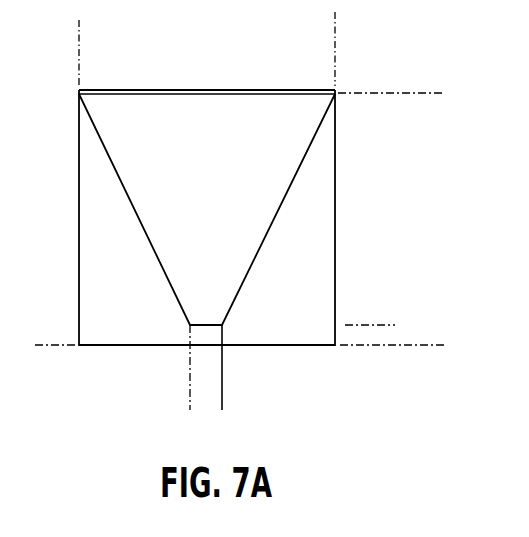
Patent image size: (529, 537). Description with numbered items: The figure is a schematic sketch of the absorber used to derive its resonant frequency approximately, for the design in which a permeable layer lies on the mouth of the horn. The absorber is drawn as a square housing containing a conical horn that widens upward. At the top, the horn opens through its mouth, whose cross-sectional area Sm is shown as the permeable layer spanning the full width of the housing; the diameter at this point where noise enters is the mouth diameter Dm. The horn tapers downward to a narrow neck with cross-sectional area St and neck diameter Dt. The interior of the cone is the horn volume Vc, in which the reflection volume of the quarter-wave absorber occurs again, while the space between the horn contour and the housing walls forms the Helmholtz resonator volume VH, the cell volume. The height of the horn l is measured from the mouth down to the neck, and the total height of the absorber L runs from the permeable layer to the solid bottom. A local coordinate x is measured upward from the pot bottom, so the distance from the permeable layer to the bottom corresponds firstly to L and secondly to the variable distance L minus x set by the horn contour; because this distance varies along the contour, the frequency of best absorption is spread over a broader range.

The diameter at horn mouth Dm is at (335, 40).
The cross-sectional area of horn mouth Sm is at (300, 92).
The horn volume Vc is at (268, 167).
The Helmholtz resonator volume VH is at (312, 291).
The height of horn l is at (380, 93).
The total height of absorber L is at (432, 93).
The local distance from pot bottom x is at (42, 305).
The cross-sectional area of horn neck St is at (205, 327).
The diameter of horn neck Dt is at (150, 393).